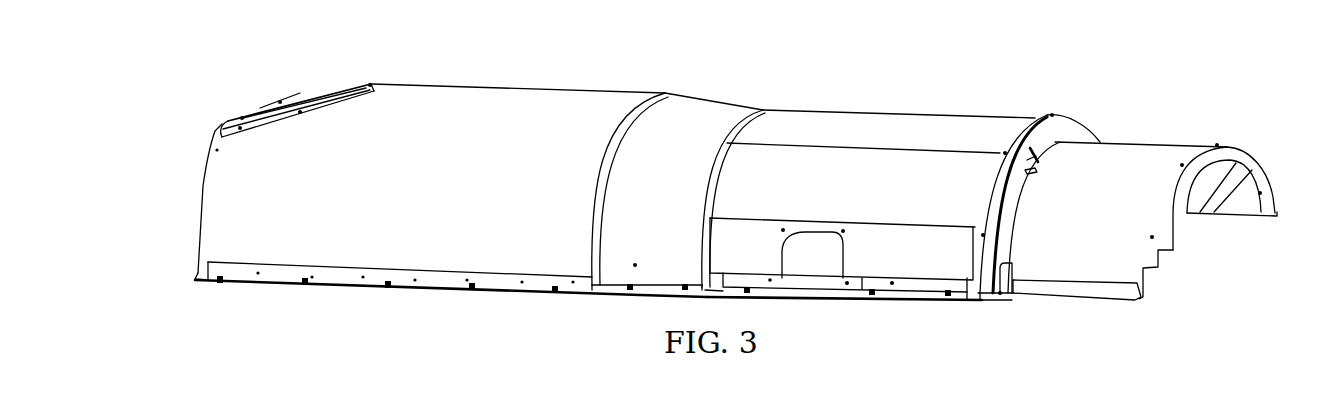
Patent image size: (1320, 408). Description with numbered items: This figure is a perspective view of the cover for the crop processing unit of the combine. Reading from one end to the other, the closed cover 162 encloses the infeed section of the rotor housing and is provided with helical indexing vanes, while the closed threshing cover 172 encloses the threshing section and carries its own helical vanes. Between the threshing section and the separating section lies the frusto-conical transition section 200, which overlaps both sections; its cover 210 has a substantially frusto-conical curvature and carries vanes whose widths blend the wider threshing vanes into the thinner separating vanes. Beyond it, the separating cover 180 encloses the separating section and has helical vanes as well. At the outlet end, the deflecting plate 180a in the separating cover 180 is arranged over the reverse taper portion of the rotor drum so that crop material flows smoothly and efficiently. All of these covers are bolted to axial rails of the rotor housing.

The closed cover 162 is at (1114, 203).
The closed threshing cover 172 is at (853, 192).
The separating cover 180 is at (420, 170).
The deflecting plate 180a is at (264, 109).
The frusto-conical transition section 200 is at (673, 186).
The cover 210 is at (721, 116).